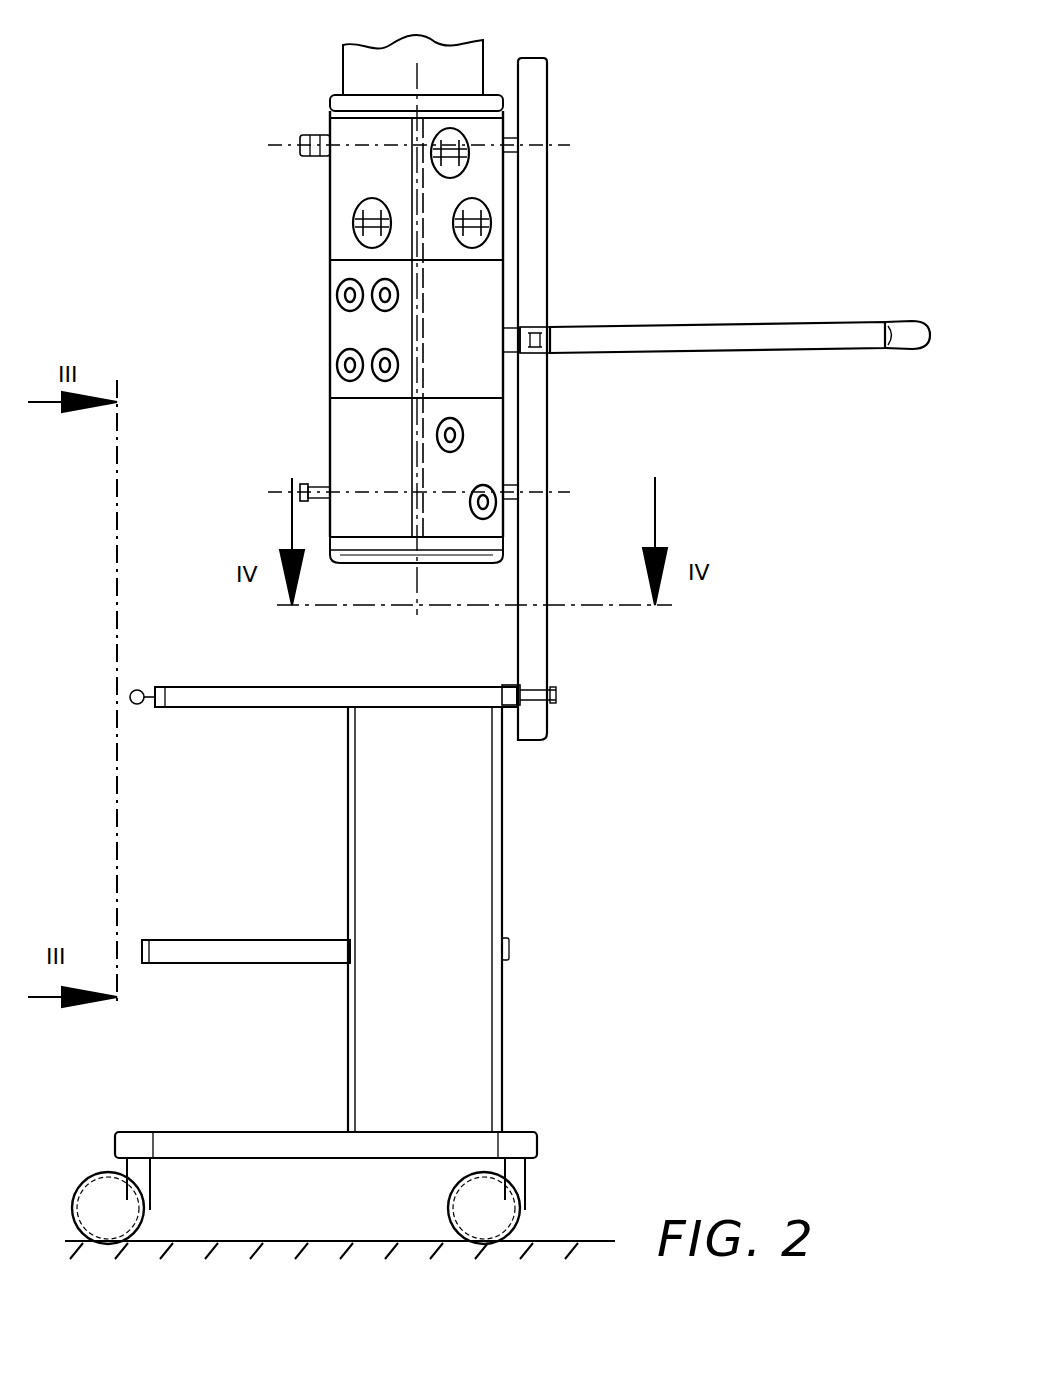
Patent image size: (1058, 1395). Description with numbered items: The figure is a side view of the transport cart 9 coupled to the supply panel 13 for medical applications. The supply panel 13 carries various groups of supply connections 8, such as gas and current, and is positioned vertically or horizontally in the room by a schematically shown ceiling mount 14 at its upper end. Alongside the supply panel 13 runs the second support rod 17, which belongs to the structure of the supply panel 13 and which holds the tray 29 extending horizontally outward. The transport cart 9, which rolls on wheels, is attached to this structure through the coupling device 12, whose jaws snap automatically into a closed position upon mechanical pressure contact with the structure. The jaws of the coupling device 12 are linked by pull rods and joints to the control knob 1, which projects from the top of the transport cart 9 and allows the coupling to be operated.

The control knob 1 is at (137, 690).
The supply connections 8 is at (345, 425).
The transport cart 9 is at (524, 843).
The coupling device 12 is at (575, 693).
The supply panel 13 is at (360, 178).
The ceiling mount 14 is at (325, 84).
The second support rod 17 is at (537, 232).
The tray 29 is at (717, 338).